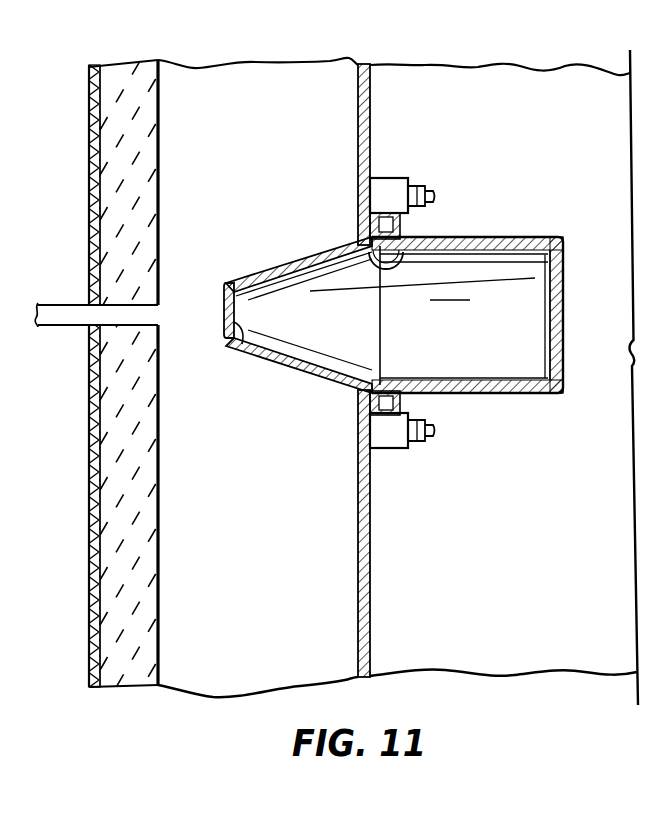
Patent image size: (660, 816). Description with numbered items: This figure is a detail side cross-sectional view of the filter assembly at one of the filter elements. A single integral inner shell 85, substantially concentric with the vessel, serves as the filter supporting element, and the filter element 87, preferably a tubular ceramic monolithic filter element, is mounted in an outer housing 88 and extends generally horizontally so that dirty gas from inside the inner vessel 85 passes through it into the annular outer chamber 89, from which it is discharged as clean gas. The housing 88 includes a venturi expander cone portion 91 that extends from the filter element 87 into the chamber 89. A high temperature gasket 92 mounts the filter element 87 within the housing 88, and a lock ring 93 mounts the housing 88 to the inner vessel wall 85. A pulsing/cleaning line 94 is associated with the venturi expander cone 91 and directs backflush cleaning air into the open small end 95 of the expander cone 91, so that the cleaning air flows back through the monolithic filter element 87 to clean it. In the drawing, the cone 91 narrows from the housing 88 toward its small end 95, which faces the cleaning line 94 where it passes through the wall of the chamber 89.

The inner shell 85 is at (378, 90).
The filter element 87 is at (562, 299).
The outer housing 88 is at (467, 283).
The annular outer chamber 89 is at (217, 83).
The venturi expander cone portion 91 is at (269, 362).
The high temperature gasket 92 is at (361, 246).
The lock ring 93 is at (393, 179).
The pulsing/cleaning line 94 is at (63, 326).
The open small end 95 is at (229, 330).